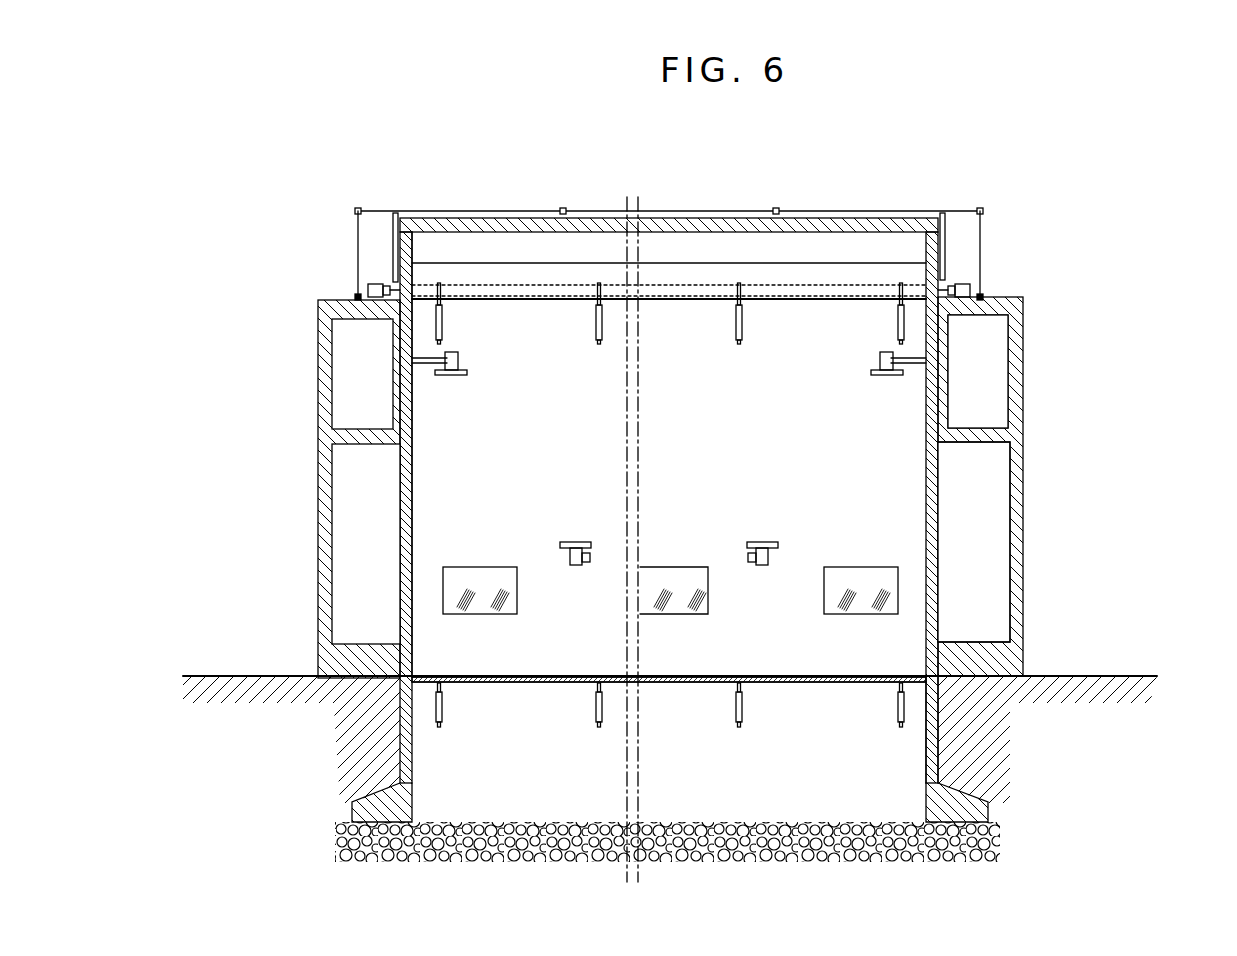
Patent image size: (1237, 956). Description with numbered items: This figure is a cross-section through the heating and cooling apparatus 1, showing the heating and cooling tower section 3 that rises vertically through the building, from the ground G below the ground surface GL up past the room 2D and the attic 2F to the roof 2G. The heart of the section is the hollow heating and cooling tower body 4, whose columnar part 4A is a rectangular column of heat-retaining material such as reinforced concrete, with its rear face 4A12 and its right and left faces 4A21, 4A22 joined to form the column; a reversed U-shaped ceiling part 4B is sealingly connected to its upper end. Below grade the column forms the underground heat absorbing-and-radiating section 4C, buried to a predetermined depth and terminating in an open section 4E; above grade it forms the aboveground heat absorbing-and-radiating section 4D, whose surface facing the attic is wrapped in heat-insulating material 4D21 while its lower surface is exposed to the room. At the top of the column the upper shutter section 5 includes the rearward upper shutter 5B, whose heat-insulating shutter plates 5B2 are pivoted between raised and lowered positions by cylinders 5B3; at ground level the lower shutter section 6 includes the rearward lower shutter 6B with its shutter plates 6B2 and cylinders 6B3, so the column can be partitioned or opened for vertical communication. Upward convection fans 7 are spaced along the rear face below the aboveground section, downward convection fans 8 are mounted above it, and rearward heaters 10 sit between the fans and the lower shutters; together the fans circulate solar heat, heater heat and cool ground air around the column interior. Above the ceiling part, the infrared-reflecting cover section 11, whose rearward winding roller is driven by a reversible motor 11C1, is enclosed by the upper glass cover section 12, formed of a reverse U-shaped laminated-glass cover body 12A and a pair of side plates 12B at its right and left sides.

The heating and cooling apparatus 1 is at (454, 210).
The heating and cooling tower section 3 is at (805, 210).
The heating and cooling tower body 4 is at (402, 592).
The columnar part 4A is at (413, 476).
The ceiling part 4B is at (862, 226).
The underground heat absorbing-and-radiating section 4C is at (940, 720).
The aboveground heat absorbing-and-radiating section 4D is at (430, 503).
The open section 4E is at (900, 822).
The rear face 4A12 is at (905, 525).
The right face 4A21 is at (405, 535).
The left face 4A22 is at (930, 490).
The heat-insulating material 4D21 is at (395, 373).
The room 2D is at (995, 617).
The attic 2F is at (995, 347).
The roof 2G is at (1003, 297).
The upper shutter section 5 is at (671, 262).
The rearward upper shutter 5B is at (598, 268).
The shutter plates 5B2 is at (534, 275).
The cylinders 5B3 is at (592, 330).
The lower shutter section 6 is at (693, 683).
The rearward lower shutter 6B is at (478, 683).
The shutter plates 6B2 is at (540, 683).
The cylinders 6B3 is at (597, 715).
The upward convection fans 7 is at (577, 565).
The downward convection fans 8 is at (460, 378).
The rearward heaters 10 is at (470, 608).
The infrared-reflecting cover section 11 is at (758, 211).
The reversible motor 11C1 is at (365, 297).
The upper glass cover section 12 is at (716, 211).
The cover body 12A is at (380, 210).
The side plates 12B is at (982, 225).
The ground surface GL is at (1143, 675).
The ground G is at (1140, 689).